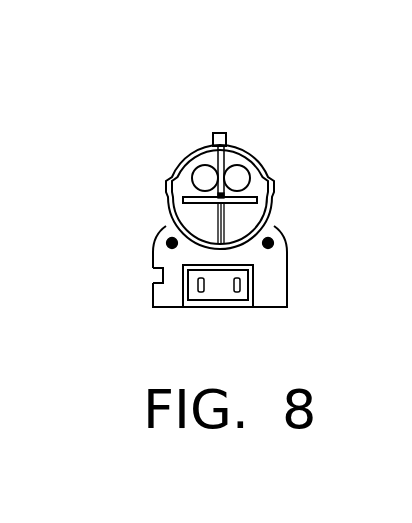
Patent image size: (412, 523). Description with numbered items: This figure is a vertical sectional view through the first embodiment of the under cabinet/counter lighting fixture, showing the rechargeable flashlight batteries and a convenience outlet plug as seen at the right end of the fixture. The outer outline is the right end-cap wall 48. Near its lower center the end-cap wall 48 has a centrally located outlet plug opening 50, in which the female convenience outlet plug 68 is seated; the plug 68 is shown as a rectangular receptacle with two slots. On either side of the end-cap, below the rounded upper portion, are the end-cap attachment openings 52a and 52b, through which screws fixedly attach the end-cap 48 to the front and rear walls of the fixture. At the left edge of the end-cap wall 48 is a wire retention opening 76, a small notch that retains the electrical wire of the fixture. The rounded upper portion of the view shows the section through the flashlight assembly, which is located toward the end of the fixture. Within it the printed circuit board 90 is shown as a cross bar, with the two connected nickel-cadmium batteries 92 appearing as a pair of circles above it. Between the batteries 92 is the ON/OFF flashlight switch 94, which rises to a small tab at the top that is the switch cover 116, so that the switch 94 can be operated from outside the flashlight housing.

The right end-cap wall 48 is at (267, 270).
The outlet plug opening 50 is at (255, 289).
The end-cap attachment opening 52a is at (268, 242).
The end-cap attachment opening 52b is at (170, 241).
The female convenience outlet plug 68 is at (221, 292).
The wire retention opening 76 is at (153, 278).
The printed circuit board 90 is at (253, 204).
The nickel-cadmium batteries 92 is at (210, 176).
The ON/OFF flashlight switch 94 is at (223, 160).
The switch cover 116 is at (218, 133).